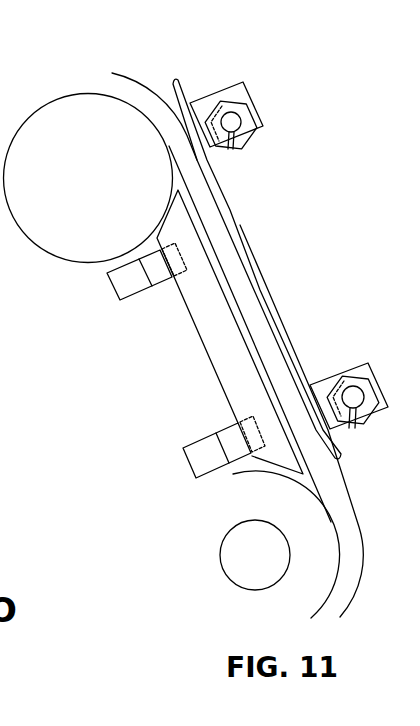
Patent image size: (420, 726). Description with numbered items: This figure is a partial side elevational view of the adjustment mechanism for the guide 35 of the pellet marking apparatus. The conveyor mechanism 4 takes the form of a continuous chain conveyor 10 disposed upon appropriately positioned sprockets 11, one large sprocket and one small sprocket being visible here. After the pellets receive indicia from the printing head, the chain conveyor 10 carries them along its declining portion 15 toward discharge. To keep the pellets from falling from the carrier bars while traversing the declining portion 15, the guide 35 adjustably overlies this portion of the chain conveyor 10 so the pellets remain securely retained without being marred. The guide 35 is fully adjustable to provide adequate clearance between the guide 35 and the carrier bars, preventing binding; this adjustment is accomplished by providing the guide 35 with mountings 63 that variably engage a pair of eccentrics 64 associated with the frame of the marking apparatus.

The conveyor mechanism 4 is at (144, 356).
The chain conveyor 10 is at (239, 292).
The sprockets 11 is at (82, 245).
The declining portion 15 is at (283, 229).
The guide 35 is at (285, 324).
The mountings 63 is at (223, 94).
The eccentrics 64 is at (246, 137).